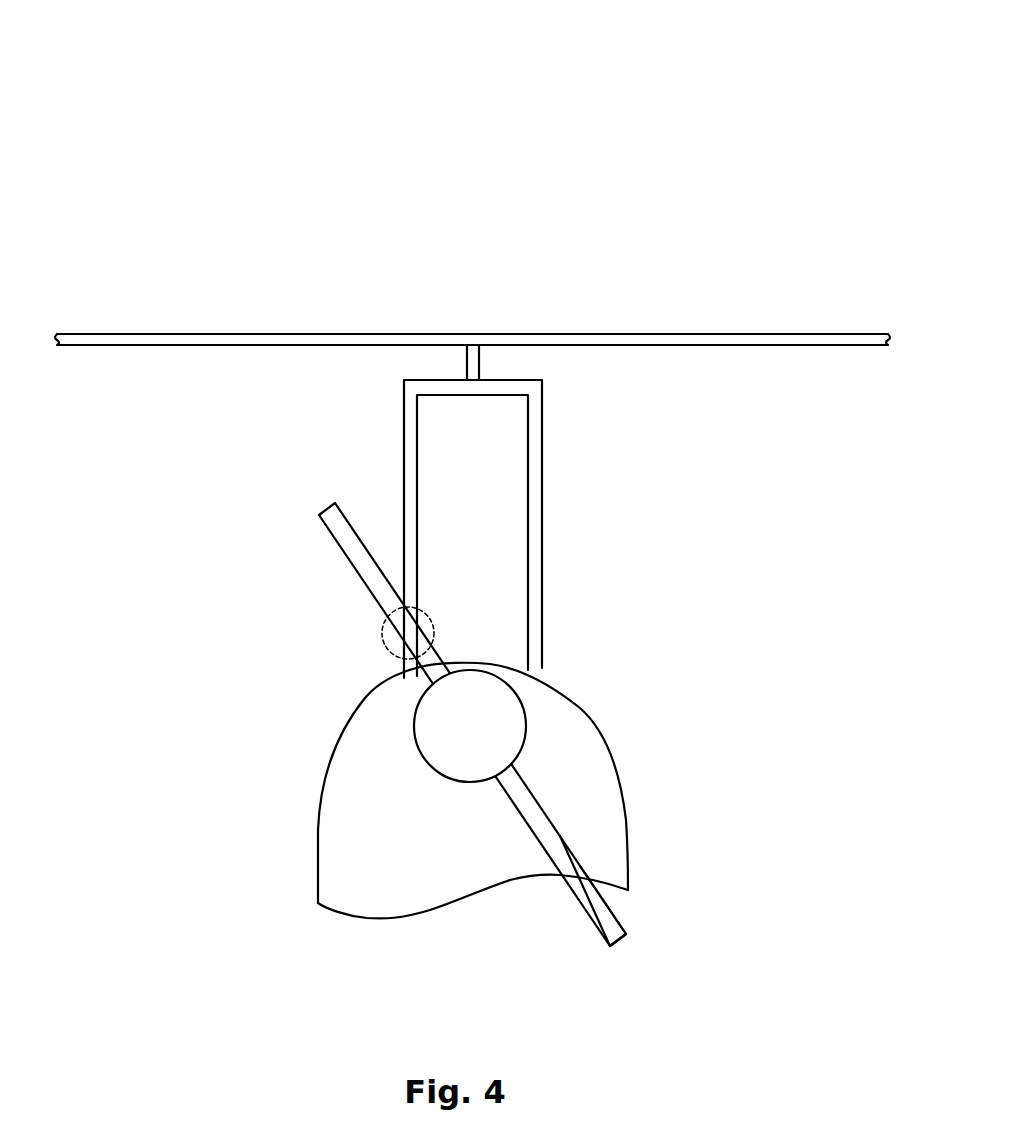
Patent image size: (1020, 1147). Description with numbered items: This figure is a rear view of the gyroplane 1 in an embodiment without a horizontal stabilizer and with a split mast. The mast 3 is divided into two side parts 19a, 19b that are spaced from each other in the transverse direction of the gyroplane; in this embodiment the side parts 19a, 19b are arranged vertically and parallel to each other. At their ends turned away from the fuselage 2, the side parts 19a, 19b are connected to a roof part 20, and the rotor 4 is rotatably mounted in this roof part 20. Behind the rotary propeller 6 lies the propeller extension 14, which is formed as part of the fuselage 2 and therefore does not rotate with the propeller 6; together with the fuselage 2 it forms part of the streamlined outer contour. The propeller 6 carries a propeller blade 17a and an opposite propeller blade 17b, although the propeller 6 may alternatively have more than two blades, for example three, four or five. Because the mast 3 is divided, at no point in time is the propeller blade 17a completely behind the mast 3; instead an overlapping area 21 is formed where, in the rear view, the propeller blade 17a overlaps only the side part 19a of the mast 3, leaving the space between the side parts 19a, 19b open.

The gyroplane 1 is at (256, 110).
The fuselage 2 is at (578, 748).
The mast 3 is at (545, 507).
The rotor 4 is at (250, 340).
The propeller 6 is at (402, 678).
The propeller extension 14 is at (487, 692).
The propeller blade 17a is at (335, 520).
The propeller blade 17b is at (570, 867).
The side part 19a is at (412, 413).
The side part 19b is at (535, 415).
The roof part 20 is at (443, 387).
The overlapping area 21 is at (383, 633).